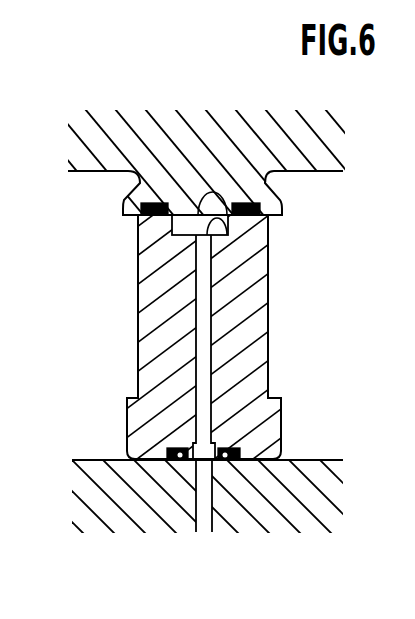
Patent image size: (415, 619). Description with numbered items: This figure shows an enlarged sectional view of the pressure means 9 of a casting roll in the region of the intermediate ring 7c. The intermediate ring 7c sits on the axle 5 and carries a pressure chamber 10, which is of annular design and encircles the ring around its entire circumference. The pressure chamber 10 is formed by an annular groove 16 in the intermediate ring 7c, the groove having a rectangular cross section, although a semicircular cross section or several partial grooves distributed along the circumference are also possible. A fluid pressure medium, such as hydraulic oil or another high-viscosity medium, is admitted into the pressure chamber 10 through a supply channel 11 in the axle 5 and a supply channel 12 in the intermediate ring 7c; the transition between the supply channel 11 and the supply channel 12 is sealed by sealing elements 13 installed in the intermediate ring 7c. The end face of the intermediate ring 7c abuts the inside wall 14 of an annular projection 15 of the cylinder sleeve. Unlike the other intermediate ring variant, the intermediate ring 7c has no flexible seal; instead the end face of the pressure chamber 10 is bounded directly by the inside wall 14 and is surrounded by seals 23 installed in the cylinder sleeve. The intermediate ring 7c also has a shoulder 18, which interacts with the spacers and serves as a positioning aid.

The axle 5 is at (110, 145).
The seals 23 is at (242, 200).
The annular projection 15 is at (276, 196).
The inside wall 14 is at (228, 215).
The annular groove 16 is at (228, 247).
The intermediate ring 7c is at (237, 340).
The supply channel 12 is at (200, 392).
The sealing elements 13 is at (237, 448).
The shoulder 18 is at (135, 399).
The pressure means 9 is at (119, 275).
The pressure chamber 10 is at (172, 222).
The supply channel 11 is at (212, 487).